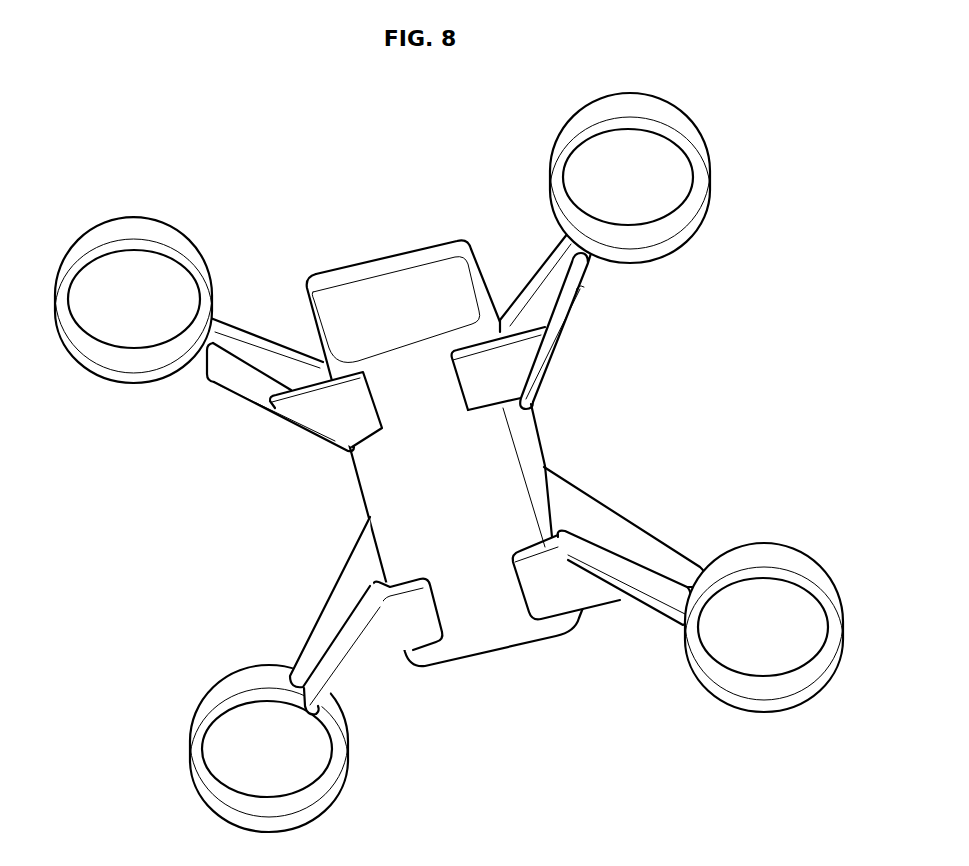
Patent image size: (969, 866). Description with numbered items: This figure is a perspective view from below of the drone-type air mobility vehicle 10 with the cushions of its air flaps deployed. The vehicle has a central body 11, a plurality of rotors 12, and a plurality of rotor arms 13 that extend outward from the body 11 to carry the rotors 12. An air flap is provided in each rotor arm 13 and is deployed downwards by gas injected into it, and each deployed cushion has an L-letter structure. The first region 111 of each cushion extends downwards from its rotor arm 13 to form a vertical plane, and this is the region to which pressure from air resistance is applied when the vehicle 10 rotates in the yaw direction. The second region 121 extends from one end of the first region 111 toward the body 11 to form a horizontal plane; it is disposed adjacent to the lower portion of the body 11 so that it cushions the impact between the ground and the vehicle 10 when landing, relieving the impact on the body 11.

The drone-type air mobility vehicle 10 is at (311, 190).
The body 11 is at (421, 252).
The rotor 12 is at (328, 423).
The rotor arm 13 is at (244, 333).
The first region 111 is at (578, 301).
The second region 121 is at (510, 371).